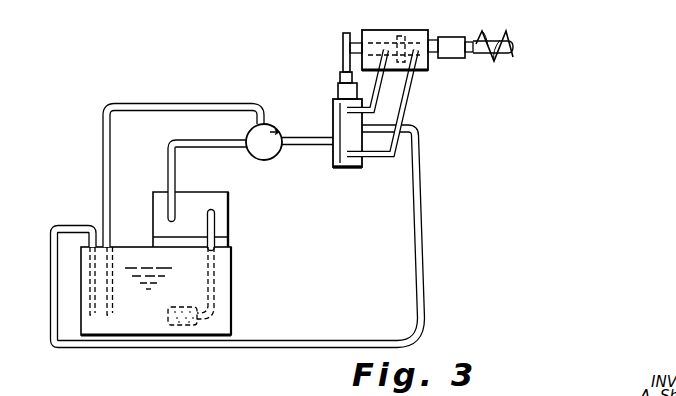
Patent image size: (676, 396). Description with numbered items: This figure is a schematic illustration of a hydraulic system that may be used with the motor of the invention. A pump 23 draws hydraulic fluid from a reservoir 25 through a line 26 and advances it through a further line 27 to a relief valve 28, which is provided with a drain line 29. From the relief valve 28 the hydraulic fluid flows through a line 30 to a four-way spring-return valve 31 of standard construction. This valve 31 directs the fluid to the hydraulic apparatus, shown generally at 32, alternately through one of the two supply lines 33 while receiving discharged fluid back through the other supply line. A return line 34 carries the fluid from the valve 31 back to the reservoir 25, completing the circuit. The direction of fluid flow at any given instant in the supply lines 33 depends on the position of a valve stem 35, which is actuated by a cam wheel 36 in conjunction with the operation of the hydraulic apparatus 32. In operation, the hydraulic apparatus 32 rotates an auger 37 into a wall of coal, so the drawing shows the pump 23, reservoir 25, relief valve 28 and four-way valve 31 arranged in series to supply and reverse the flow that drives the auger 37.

The pump 23 is at (222, 192).
The reservoir 25 is at (229, 298).
The line 26 is at (215, 230).
The line 27 is at (167, 157).
The relief valve 28 is at (273, 127).
The drain line 29 is at (104, 153).
The line 30 is at (317, 139).
The four-way spring-return valve 31 is at (365, 168).
The hydraulic apparatus 32 is at (463, 81).
The supply lines 33 is at (406, 99).
The line 34 is at (422, 197).
The valve stem 35 is at (340, 78).
The cam wheel 36 is at (343, 36).
The auger 37 is at (512, 52).